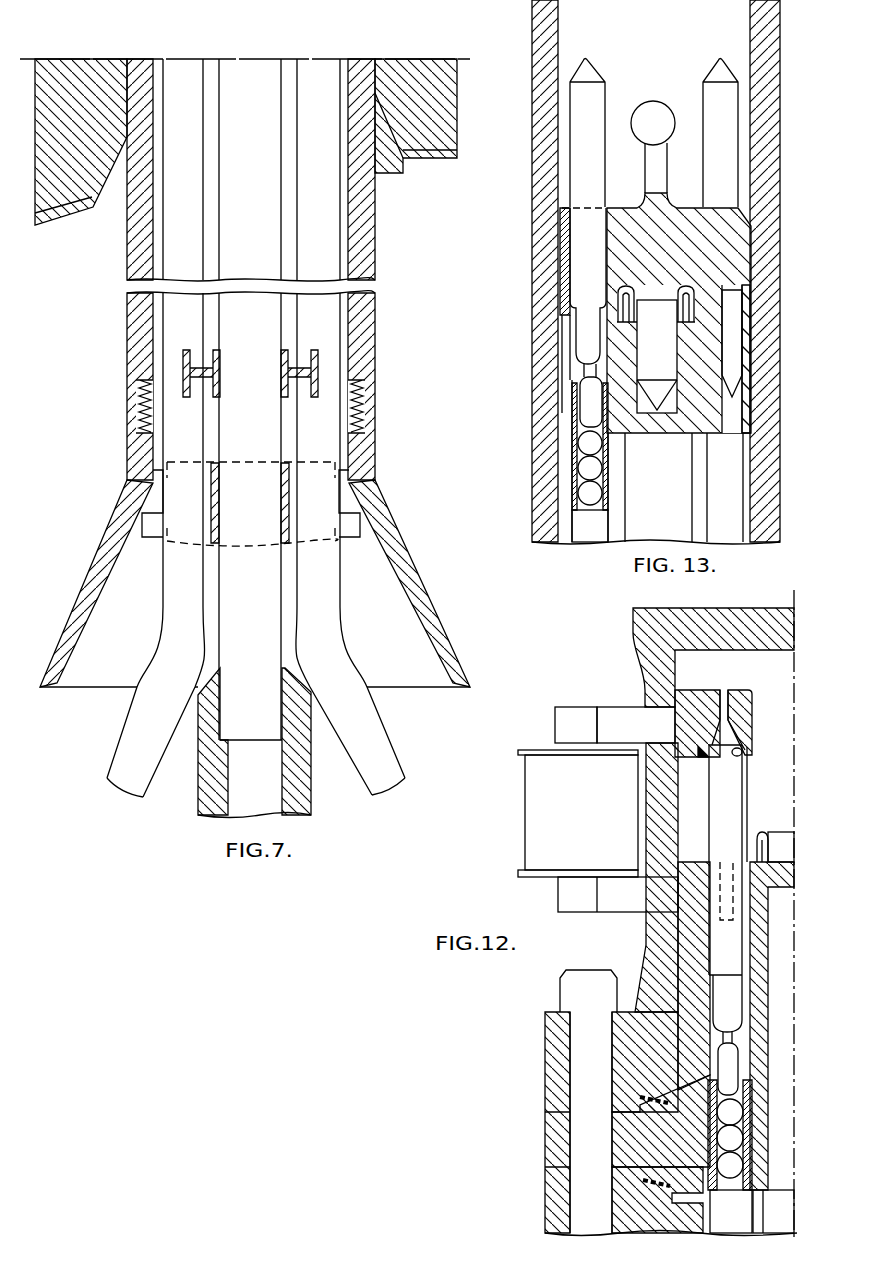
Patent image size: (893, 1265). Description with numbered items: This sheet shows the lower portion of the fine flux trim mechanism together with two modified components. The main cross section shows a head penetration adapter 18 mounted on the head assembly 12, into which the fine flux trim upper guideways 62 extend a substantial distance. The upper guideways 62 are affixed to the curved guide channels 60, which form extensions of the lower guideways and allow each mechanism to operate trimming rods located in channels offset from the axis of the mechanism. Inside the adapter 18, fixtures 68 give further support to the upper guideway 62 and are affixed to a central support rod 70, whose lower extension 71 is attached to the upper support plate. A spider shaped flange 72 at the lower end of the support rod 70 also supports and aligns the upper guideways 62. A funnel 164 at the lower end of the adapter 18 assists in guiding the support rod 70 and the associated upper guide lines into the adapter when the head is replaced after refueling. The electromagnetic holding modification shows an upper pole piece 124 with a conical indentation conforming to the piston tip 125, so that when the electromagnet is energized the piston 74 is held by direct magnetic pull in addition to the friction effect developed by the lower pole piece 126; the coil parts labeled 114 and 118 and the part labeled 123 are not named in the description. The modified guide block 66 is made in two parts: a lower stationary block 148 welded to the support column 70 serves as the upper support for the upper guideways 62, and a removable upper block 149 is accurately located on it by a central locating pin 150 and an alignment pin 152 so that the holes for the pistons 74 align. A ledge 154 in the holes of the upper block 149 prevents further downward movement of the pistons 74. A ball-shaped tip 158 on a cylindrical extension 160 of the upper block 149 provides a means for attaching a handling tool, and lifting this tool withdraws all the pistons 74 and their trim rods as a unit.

In FIG. 7, the head assembly 12 is at (447, 108).
In FIG. 7, the head penetration adapter 18 is at (376, 258).
In FIG. 7, the curved guide channel 60 is at (127, 730).
In FIG. 7, the fine flux trim upper guideway 62 is at (337, 226).
In FIG. 13, the fine flux trim upper guideway 62 is at (573, 488).
In FIG. 13, the guide block 66 is at (782, 295).
In FIG. 7, the fixture 68 is at (282, 352).
In FIG. 7, the central support rod 70 is at (273, 428).
In FIG. 13, the central support rod 70 is at (680, 483).
In FIG. 7, the lower extension 71 is at (307, 777).
In FIG. 7, the spider shaped flange 72 is at (367, 522).
In FIG. 12, the piston 74 is at (735, 807).
In FIG. 12, the solenoid assembly 114 is at (557, 813).
In FIG. 12, the coil 118 is at (540, 820).
In FIG. 12, the seal ring 123 is at (733, 750).
In FIG. 12, the upper pole piece 124 is at (683, 726).
In FIG. 12, the piston tip 125 is at (728, 733).
In FIG. 12, the lower pole piece 126 is at (613, 913).
In FIG. 13, the lower stationary block 148 is at (752, 381).
In FIG. 13, the upper block 149 is at (738, 244).
In FIG. 13, the central locating pin 150 is at (660, 400).
In FIG. 13, the alignment pin 152 is at (736, 346).
In FIG. 13, the ledge 154 is at (562, 316).
In FIG. 13, the ball-shaped tip 158 is at (658, 110).
In FIG. 13, the cylindrical extension 160 is at (690, 168).
In FIG. 7, the funnel 164 is at (450, 628).